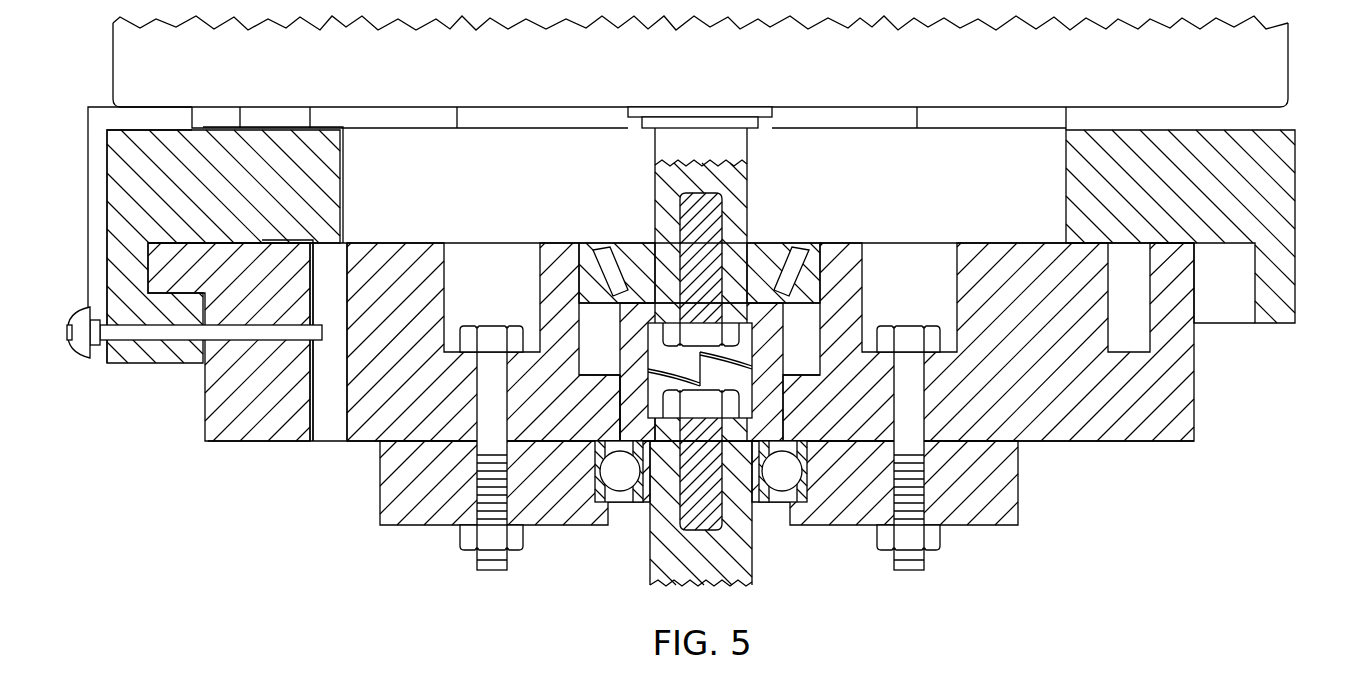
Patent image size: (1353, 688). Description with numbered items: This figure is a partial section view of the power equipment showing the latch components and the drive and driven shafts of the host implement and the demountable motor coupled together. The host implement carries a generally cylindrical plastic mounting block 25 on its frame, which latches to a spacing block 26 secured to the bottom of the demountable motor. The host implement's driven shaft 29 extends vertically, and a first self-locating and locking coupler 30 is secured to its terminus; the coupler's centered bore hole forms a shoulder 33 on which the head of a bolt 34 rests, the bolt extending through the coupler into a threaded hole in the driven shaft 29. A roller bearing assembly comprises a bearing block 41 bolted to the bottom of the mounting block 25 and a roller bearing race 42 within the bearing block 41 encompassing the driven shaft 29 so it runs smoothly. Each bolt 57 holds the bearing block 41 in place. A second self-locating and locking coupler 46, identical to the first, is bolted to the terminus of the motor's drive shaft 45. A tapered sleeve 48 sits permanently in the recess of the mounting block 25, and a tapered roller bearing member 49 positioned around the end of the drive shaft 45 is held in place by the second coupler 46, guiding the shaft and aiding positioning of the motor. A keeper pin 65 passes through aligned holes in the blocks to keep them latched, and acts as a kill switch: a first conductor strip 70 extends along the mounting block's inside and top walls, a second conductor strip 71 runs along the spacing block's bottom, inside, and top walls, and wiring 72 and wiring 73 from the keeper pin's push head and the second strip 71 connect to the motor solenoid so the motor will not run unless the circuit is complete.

The mounting block 25 is at (245, 423).
The spacing block 26 is at (1294, 151).
The driven shaft 29 is at (650, 571).
The first self-locating and locking coupler 30 is at (780, 409).
The shoulder 33 is at (620, 427).
The bolt 34 is at (725, 519).
The bearing block 41 is at (392, 491).
The roller bearing race 42 is at (648, 501).
The drive shaft 45 is at (700, 146).
The second self-locating and locking coupler 46 is at (747, 185).
The tapered sleeve 48 is at (818, 251).
The tapered roller bearing member 49 is at (770, 248).
The bolt 57 is at (905, 356).
The keeper pin 65 is at (148, 336).
The first section of metallic conductor strip 70 is at (320, 306).
The second section of metallic conductor strip 71 is at (346, 191).
The wiring 72 is at (88, 166).
The wiring 73 is at (203, 130).